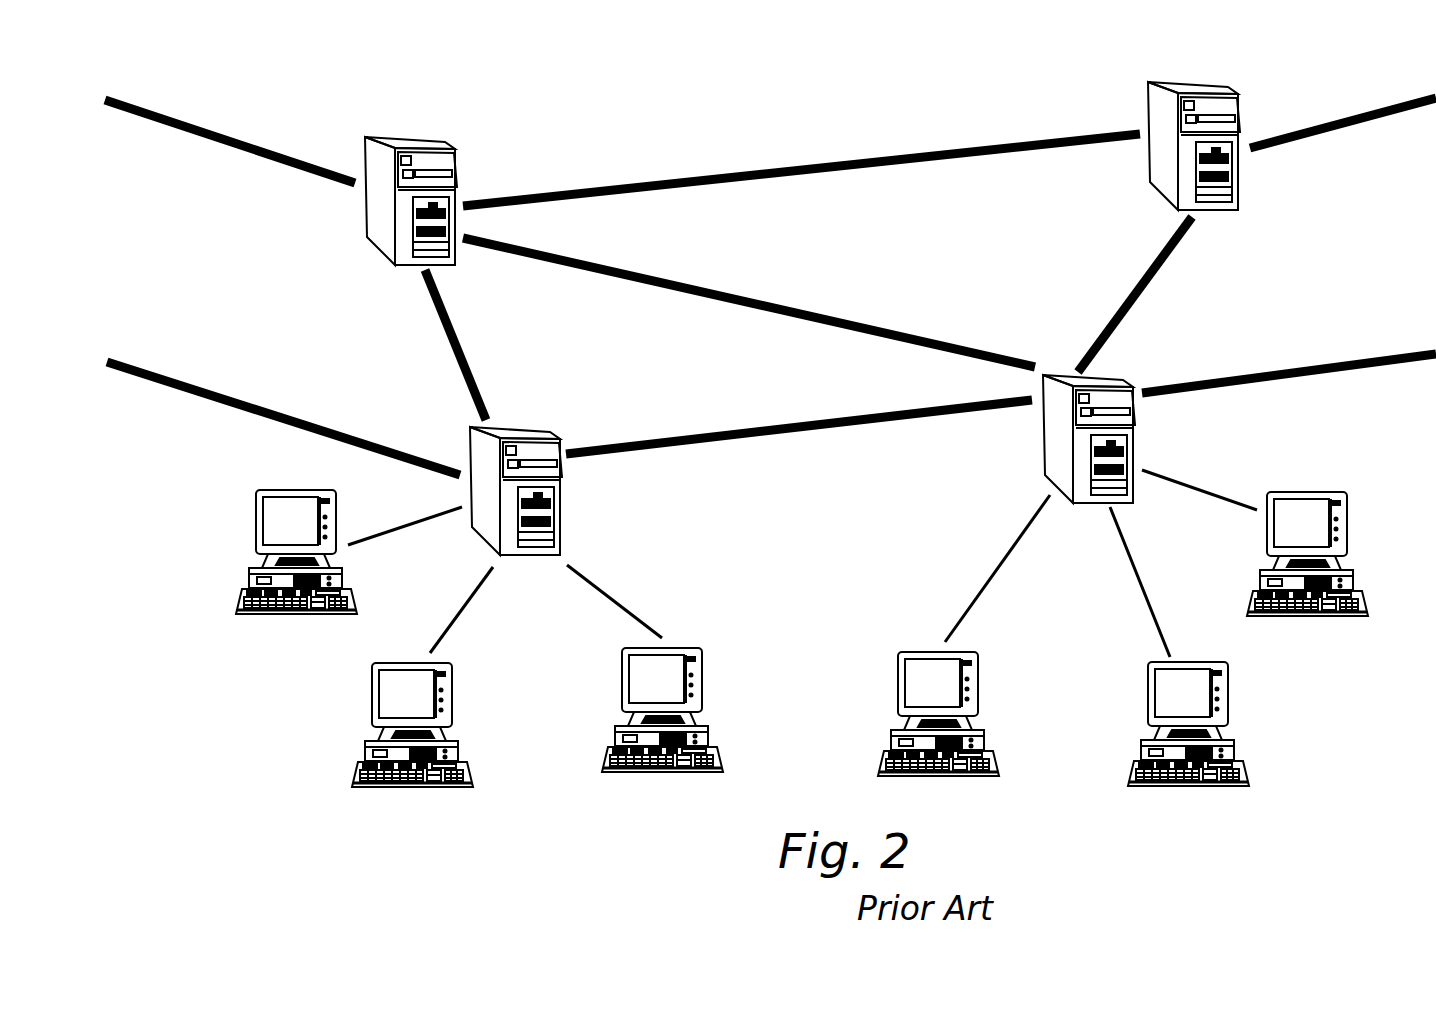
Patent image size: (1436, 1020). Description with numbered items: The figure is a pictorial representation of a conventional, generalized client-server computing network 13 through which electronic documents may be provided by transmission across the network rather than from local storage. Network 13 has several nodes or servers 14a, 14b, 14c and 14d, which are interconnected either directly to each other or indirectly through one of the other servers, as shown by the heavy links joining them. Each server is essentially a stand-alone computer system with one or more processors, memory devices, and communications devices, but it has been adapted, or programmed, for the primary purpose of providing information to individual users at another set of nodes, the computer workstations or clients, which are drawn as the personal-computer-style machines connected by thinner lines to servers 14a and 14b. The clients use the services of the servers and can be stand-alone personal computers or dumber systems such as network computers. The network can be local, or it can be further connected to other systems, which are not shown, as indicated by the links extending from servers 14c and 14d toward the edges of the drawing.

The client-server computing network 13 is at (272, 782).
The server 14a is at (558, 503).
The server 14b is at (1055, 440).
The server 14c is at (367, 202).
The server 14d is at (1177, 82).